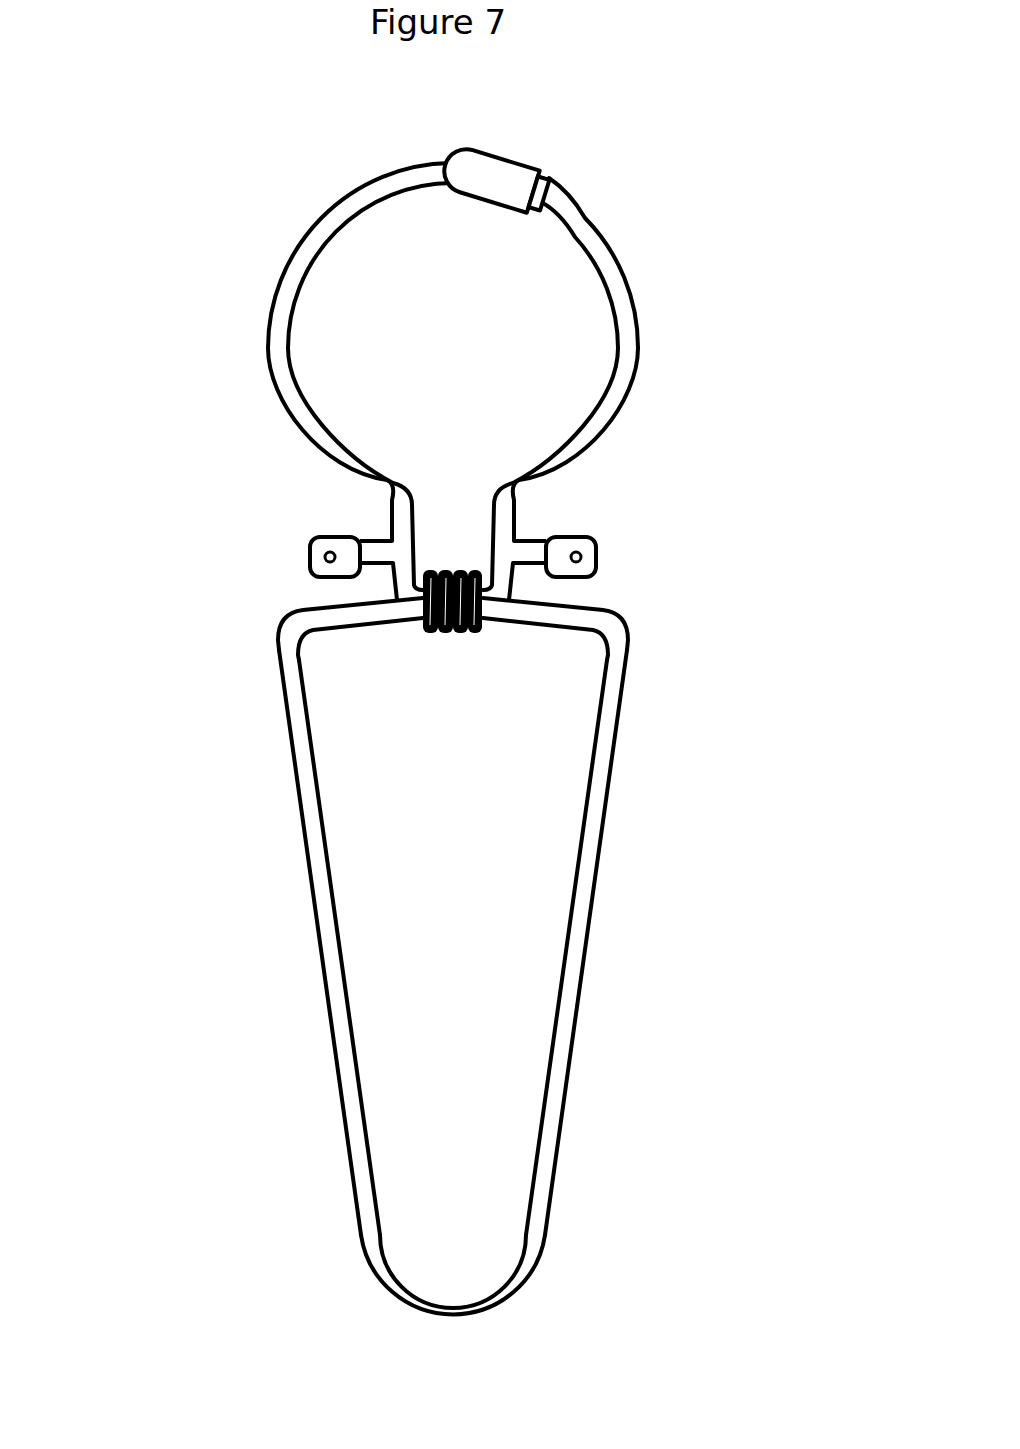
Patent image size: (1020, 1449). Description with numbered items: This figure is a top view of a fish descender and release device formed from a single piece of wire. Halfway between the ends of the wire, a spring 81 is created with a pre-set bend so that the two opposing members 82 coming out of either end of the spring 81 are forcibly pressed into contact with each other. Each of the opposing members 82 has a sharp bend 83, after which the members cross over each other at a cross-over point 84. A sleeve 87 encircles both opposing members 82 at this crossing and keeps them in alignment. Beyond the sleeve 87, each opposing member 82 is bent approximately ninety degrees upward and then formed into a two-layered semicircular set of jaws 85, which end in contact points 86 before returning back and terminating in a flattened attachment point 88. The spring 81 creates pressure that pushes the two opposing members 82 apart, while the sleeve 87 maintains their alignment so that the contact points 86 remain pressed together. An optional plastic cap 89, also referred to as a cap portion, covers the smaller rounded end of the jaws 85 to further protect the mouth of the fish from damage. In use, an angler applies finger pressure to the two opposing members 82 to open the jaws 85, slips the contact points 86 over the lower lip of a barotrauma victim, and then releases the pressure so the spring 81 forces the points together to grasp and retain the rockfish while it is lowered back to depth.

The spring 81 is at (530, 1255).
The opposing members 82 is at (332, 1055).
The sharp bend 83 is at (618, 647).
The cross-over point 84 is at (447, 633).
The jaws 85 is at (508, 522).
The contact points 86 is at (437, 163).
The sleeve 87 is at (476, 633).
The flattened attachment point 88 is at (310, 556).
The plastic cap 89 is at (505, 183).